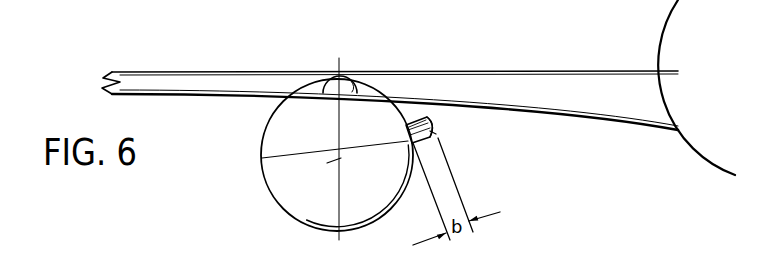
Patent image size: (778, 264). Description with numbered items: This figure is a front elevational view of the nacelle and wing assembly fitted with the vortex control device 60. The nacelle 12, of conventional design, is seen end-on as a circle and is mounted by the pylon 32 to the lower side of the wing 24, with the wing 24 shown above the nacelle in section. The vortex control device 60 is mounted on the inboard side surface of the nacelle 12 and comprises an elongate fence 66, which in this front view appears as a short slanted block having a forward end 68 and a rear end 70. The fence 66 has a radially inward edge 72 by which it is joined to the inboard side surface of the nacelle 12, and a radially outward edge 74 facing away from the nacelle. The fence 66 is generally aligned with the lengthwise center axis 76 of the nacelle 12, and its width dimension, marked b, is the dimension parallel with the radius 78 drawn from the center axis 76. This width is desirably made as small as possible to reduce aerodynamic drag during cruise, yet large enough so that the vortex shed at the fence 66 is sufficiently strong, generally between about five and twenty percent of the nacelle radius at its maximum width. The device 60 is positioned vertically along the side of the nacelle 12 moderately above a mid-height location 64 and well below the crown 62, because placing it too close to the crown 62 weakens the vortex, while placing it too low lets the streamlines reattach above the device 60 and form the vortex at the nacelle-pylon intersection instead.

The nacelle 12 is at (260, 139).
The wing 24 is at (522, 70).
The pylon 32 is at (322, 78).
The vortex control device 60 is at (416, 117).
The crown 62 is at (347, 78).
The mid-height location 64 is at (421, 163).
The elongate fence 66 is at (436, 133).
The forward end 68 is at (445, 153).
The rear end 70 is at (422, 118).
The radially inward edge 72 is at (408, 142).
The radially outward edge 74 is at (433, 125).
The center axis 76 is at (262, 158).
The radius 78 is at (362, 154).